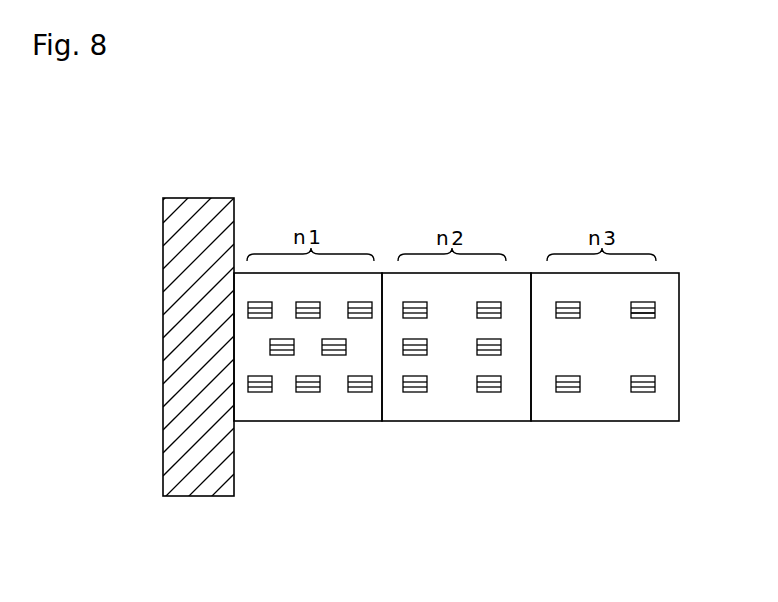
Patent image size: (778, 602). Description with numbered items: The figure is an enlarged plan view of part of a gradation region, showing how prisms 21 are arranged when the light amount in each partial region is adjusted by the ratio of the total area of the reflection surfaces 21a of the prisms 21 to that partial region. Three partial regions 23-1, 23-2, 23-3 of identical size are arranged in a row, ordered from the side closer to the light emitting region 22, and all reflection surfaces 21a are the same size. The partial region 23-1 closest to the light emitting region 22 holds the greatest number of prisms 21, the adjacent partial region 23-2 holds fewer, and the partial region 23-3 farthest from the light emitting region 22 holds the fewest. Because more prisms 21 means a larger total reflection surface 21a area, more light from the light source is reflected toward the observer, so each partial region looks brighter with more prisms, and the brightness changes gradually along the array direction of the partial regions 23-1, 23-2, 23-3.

The prism 21 is at (656, 300).
The reflection surface 21a is at (643, 318).
The light emitting region 22 is at (197, 480).
The partial region 23-1 is at (312, 421).
The partial region 23-2 is at (453, 421).
The partial region 23-3 is at (603, 421).